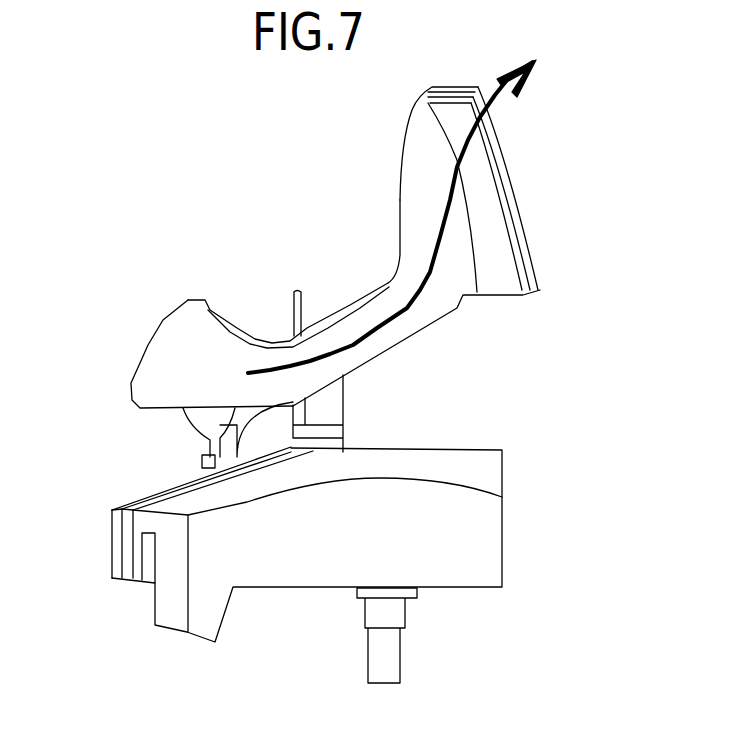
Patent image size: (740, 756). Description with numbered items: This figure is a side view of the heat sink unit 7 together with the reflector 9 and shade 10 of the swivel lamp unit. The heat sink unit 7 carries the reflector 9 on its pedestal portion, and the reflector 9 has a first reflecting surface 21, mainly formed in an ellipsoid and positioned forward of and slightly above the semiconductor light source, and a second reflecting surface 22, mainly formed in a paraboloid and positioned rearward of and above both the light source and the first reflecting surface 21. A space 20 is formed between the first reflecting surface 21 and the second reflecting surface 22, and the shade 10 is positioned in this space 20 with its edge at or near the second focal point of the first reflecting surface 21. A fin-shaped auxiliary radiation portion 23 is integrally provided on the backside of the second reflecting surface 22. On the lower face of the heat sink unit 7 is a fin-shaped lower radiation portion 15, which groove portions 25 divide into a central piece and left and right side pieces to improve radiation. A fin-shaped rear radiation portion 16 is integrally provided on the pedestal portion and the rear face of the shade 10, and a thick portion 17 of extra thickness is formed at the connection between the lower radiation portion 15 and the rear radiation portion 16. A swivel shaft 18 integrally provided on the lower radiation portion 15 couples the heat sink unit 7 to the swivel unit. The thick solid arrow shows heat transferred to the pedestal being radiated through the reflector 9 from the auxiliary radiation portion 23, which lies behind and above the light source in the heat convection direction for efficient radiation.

The heat sink unit 7 is at (513, 458).
The reflector 9 is at (156, 310).
The shade 10 is at (297, 290).
The lower radiation portion 15 is at (167, 592).
The rear radiation portion 16 is at (330, 408).
The thick portion 17 is at (202, 457).
The swivel shaft 18 is at (390, 650).
The space 20 is at (345, 282).
The first reflecting surface 21 is at (217, 308).
The second reflecting surface 22 is at (403, 157).
The auxiliary radiation portion 23 is at (487, 182).
The groove portions 25 is at (127, 530).